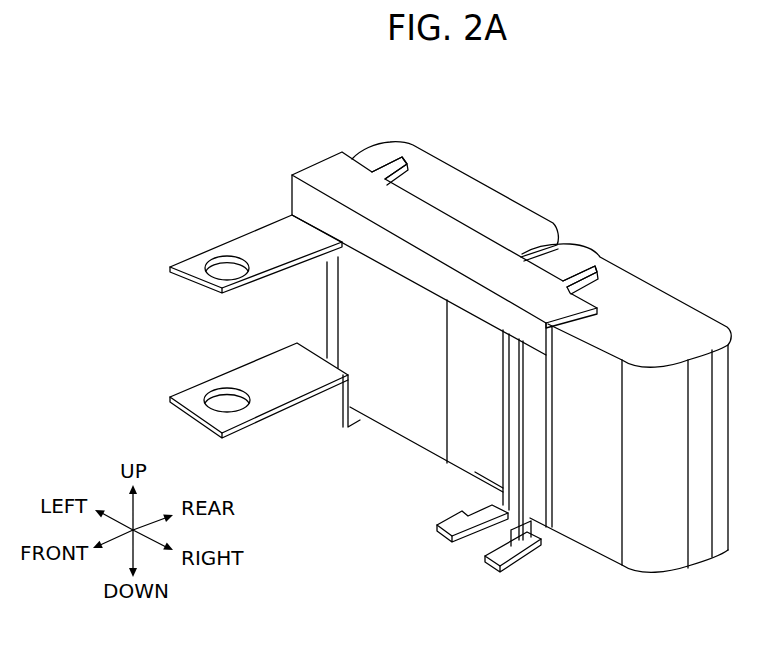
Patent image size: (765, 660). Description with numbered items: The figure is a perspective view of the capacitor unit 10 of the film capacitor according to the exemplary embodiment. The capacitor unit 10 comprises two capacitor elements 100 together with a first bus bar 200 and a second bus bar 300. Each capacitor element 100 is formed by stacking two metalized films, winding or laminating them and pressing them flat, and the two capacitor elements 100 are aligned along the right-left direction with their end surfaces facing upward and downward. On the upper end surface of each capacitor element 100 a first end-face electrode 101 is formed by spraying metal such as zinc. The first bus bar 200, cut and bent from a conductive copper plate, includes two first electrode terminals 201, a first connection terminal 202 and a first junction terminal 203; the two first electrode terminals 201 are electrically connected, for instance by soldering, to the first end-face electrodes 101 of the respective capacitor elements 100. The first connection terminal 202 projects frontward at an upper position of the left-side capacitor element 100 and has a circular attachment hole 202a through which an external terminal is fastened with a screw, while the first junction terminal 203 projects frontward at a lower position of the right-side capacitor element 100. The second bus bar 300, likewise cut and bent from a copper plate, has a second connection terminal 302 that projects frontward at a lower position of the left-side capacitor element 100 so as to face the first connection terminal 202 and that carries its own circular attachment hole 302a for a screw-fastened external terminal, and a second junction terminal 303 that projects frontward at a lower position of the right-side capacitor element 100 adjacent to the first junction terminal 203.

The capacitor unit 10 is at (576, 192).
The capacitor element 100 is at (478, 170).
The first end-face electrode 101 is at (503, 208).
The first bus bar 200 is at (298, 167).
The first electrode terminal 201 is at (402, 153).
The first connection terminal 202 is at (258, 238).
The attachment hole 202a is at (210, 255).
The first junction terminal 203 is at (550, 523).
The second bus bar 300 is at (327, 432).
The second connection terminal 302 is at (250, 378).
The attachment hole 302a is at (210, 388).
The second junction terminal 303 is at (450, 520).